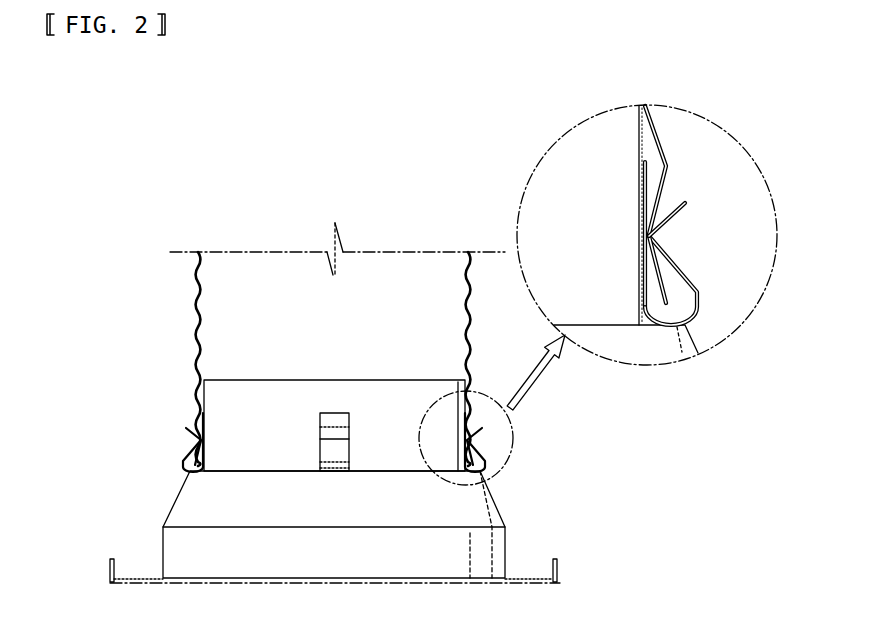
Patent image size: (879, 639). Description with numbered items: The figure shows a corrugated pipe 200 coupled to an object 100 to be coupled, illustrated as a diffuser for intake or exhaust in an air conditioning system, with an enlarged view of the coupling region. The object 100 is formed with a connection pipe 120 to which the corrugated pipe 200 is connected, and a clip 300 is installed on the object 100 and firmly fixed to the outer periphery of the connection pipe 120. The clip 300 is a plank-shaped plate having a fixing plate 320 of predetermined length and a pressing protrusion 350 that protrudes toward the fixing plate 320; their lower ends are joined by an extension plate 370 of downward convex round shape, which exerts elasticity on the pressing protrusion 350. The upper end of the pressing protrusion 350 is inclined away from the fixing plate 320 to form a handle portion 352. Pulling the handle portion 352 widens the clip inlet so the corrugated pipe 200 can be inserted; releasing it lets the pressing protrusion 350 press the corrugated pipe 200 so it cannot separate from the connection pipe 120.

The object to be coupled 100 is at (170, 502).
The connection pipe 120 is at (218, 408).
The corrugated pipe 200 is at (197, 305).
The clip 300 is at (453, 317).
The fixing plate 320 is at (648, 195).
The pressing protrusion 350 is at (653, 237).
The handle portion 352 is at (686, 207).
The extension plate 370 is at (667, 323).